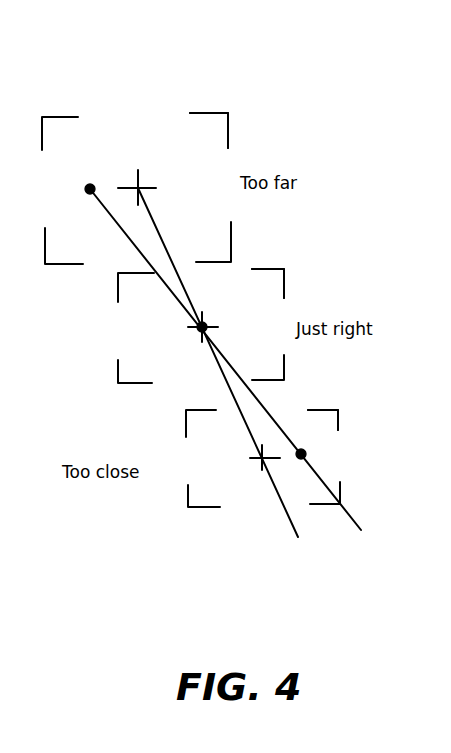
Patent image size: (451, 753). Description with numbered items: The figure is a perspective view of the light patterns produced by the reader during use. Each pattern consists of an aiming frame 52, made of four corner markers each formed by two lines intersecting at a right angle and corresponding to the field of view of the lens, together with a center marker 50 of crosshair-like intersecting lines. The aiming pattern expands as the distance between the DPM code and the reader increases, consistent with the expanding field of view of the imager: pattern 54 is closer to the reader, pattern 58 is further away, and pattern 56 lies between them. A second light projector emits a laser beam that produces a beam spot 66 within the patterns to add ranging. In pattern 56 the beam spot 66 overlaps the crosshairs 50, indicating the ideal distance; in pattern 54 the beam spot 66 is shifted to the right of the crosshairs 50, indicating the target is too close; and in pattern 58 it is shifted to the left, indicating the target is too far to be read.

The center marker 50 is at (199, 338).
The aiming frame 52 is at (202, 108).
The pattern 54 is at (340, 425).
The pattern 56 is at (289, 281).
The pattern 58 is at (234, 129).
The beam spot 66 is at (90, 185).